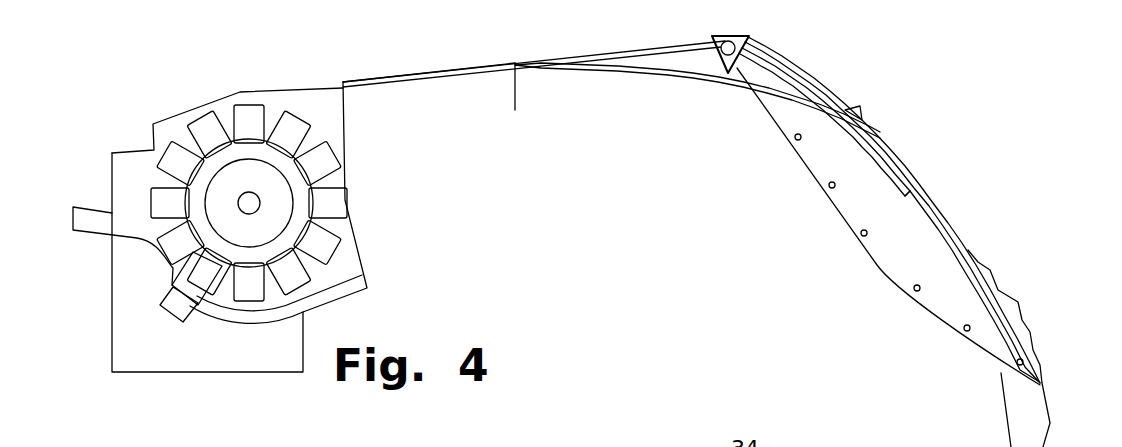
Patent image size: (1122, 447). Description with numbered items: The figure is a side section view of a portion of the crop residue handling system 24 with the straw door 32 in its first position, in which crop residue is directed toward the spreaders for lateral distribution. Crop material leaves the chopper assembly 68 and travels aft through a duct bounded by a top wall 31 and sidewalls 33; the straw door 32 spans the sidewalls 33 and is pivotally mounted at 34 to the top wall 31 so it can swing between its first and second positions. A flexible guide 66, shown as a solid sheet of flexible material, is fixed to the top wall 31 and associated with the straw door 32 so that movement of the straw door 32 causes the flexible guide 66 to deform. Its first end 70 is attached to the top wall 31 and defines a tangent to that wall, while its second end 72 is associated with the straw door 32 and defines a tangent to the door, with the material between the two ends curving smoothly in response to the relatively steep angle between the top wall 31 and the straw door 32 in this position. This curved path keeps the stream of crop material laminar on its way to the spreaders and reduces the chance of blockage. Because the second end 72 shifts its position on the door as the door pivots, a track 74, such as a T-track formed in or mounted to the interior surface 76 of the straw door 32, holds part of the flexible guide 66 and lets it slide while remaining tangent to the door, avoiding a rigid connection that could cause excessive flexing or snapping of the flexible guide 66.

The crop residue handling system 24 is at (623, 167).
The top wall 31 is at (506, 62).
The straw door 32 is at (878, 123).
The sidewalls 33 is at (892, 263).
The pivot mounting 34 is at (723, 38).
The flexible guide 66 is at (681, 78).
The chopper assembly 68 is at (377, 213).
The first end 70 is at (515, 108).
The second end 72 is at (910, 168).
The track 74 is at (912, 152).
The interior surface 76 is at (968, 248).